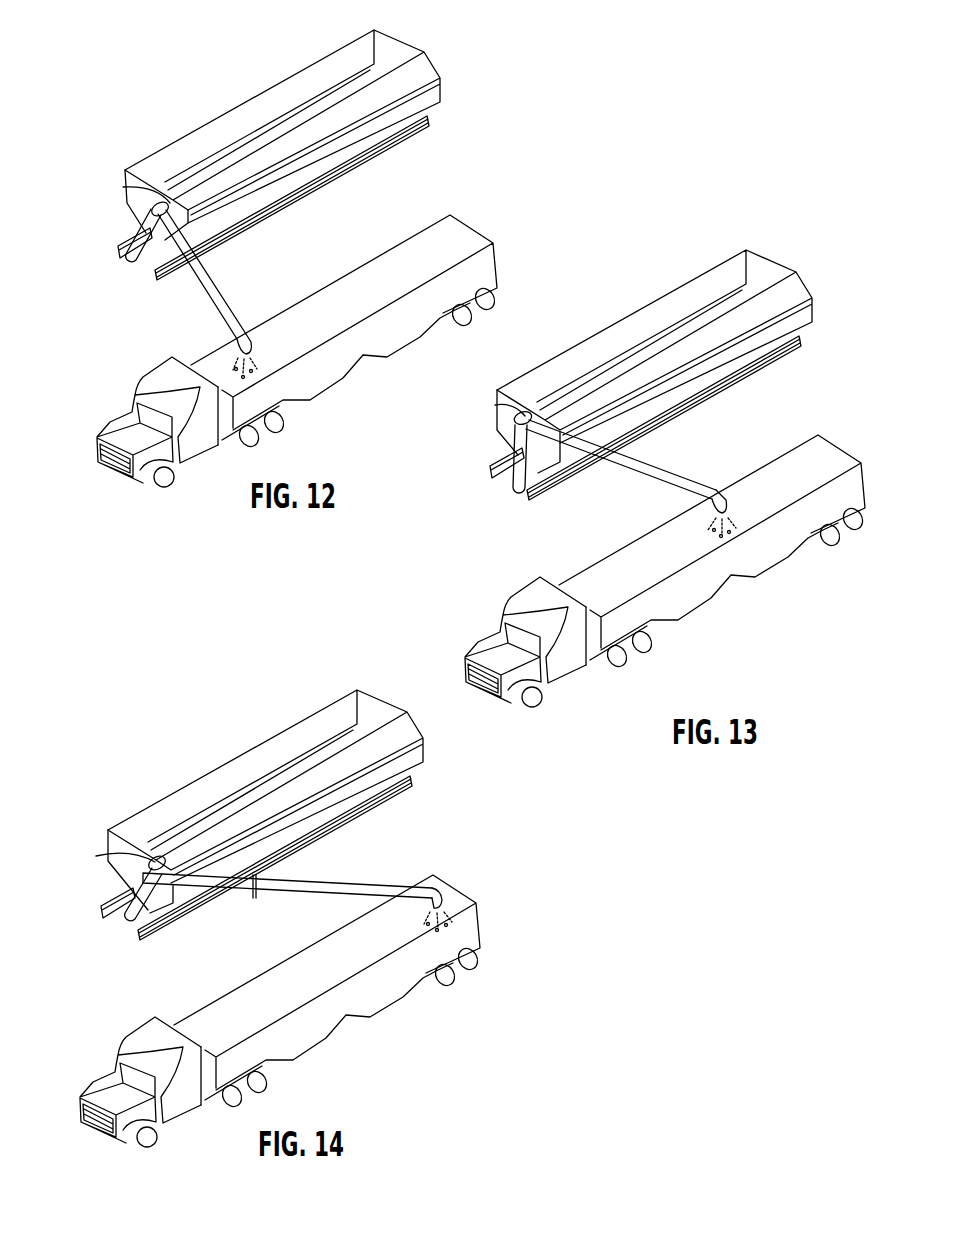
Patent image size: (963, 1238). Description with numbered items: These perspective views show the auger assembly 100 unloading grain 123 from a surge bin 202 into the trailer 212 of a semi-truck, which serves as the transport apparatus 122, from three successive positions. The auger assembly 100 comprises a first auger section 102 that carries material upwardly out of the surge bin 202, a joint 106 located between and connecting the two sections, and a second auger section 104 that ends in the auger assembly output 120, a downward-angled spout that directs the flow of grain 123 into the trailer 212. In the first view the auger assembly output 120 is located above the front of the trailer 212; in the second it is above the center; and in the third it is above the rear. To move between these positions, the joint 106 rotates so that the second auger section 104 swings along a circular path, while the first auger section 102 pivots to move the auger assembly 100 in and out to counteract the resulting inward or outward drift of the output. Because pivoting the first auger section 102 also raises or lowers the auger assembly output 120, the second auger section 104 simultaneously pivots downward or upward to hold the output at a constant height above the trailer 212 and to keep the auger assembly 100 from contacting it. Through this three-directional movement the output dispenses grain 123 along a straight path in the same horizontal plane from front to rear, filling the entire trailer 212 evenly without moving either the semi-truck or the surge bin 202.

In FIG. 12, the auger assembly 100 is at (131, 233).
In FIG. 13, the auger assembly 100 is at (492, 459).
In FIG. 14, the auger assembly 100 is at (70, 902).
In FIG. 12, the first auger section 102 is at (133, 268).
In FIG. 13, the first auger section 102 is at (511, 494).
In FIG. 14, the first auger section 102 is at (123, 921).
In FIG. 12, the second auger section 104 is at (238, 312).
In FIG. 13, the second auger section 104 is at (664, 470).
In FIG. 14, the second auger section 104 is at (328, 880).
In FIG. 12, the joint 106 is at (125, 188).
In FIG. 13, the joint 106 is at (492, 409).
In FIG. 14, the joint 106 is at (96, 856).
In FIG. 12, the auger assembly output 120 is at (275, 330).
In FIG. 13, the auger assembly output 120 is at (727, 502).
In FIG. 14, the auger assembly output 120 is at (420, 906).
In FIG. 12, the transport apparatus 122 is at (108, 424).
In FIG. 13, the transport apparatus 122 is at (478, 640).
In FIG. 14, the transport apparatus 122 is at (100, 1078).
In FIG. 12, the grain 123 is at (262, 357).
In FIG. 13, the grain 123 is at (697, 543).
In FIG. 14, the grain 123 is at (402, 935).
In FIG. 12, the surge bin 202 is at (405, 50).
In FIG. 13, the surge bin 202 is at (775, 272).
In FIG. 14, the surge bin 202 is at (392, 712).
In FIG. 12, the trailer 212 is at (478, 230).
In FIG. 13, the trailer 212 is at (837, 443).
In FIG. 14, the trailer 212 is at (461, 880).